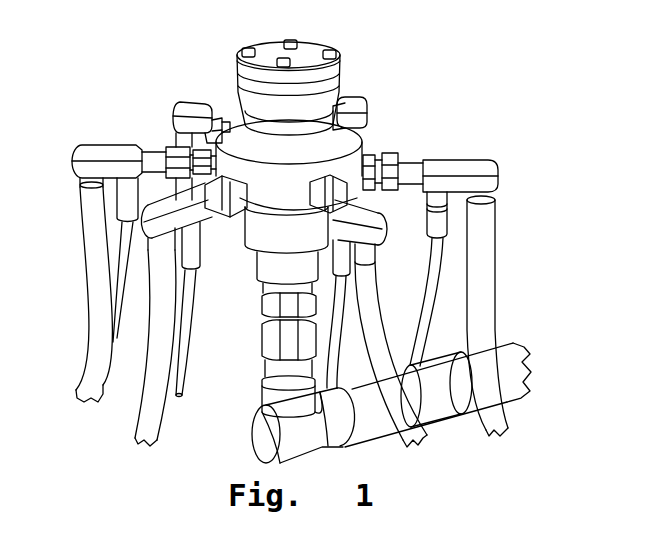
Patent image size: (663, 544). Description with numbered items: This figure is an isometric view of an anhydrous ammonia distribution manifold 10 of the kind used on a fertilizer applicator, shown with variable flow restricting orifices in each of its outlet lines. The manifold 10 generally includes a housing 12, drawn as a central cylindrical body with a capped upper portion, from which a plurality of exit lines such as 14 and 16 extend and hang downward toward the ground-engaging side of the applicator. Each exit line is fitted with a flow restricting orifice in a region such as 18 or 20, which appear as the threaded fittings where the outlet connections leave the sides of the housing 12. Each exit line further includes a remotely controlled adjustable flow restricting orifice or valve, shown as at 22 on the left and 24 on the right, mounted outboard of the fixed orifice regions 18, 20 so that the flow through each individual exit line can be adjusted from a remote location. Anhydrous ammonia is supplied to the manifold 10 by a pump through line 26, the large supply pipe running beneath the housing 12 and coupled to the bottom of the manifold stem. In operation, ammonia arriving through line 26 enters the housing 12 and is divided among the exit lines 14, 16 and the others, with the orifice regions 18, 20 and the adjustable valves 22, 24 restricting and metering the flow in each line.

The anhydrous ammonia distribution manifold 10 is at (370, 60).
The housing 12 is at (242, 73).
The exit line 14 is at (95, 293).
The exit line 16 is at (483, 262).
The flow restricting orifice region 18 is at (173, 153).
The flow restricting orifice region 20 is at (403, 168).
The remotely controlled adjustable flow restricting orifice or valve 22 is at (92, 152).
The remotely controlled adjustable flow restricting orifice or valve 24 is at (462, 178).
The line 26 is at (440, 403).